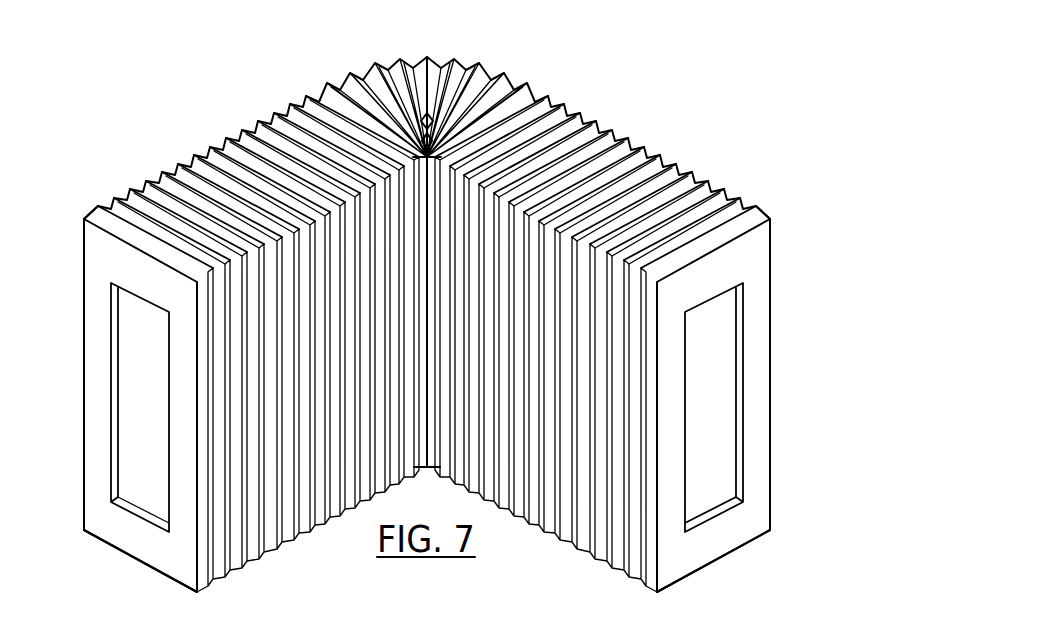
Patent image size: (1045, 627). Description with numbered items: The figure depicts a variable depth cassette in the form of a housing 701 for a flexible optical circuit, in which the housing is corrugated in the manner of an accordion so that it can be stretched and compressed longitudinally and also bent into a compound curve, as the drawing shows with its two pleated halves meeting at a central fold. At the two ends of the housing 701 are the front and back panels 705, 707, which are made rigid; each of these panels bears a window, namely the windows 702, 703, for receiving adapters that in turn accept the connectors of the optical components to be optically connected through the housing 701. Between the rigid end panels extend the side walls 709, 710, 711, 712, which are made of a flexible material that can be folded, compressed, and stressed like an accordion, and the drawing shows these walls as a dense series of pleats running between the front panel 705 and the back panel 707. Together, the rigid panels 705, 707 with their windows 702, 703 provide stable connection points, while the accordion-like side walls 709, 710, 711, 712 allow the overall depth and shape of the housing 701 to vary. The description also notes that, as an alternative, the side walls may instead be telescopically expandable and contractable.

The housing 701 is at (624, 103).
The window 702 is at (113, 333).
The window 703 is at (741, 418).
The front panel 705 is at (140, 543).
The back panel 707 is at (735, 535).
The side wall 709 is at (243, 165).
The side wall 710 is at (288, 515).
The side wall 711 is at (144, 386).
The side wall 712 is at (165, 505).